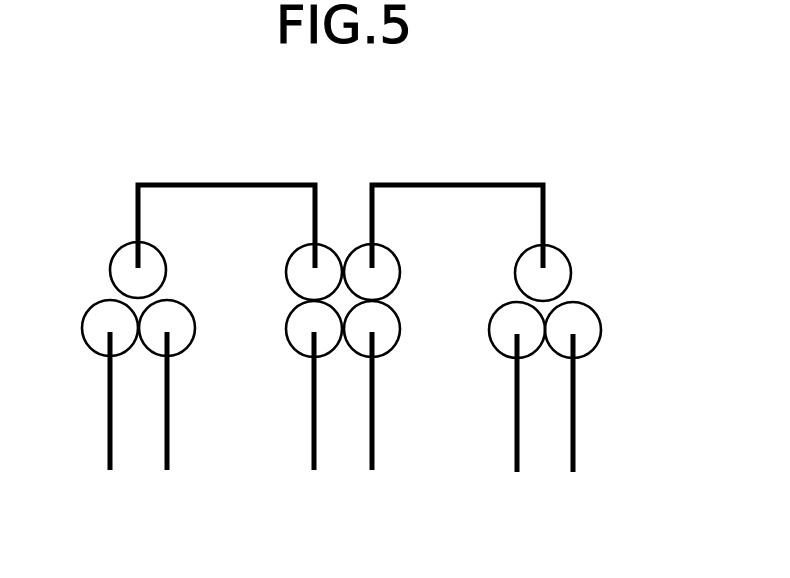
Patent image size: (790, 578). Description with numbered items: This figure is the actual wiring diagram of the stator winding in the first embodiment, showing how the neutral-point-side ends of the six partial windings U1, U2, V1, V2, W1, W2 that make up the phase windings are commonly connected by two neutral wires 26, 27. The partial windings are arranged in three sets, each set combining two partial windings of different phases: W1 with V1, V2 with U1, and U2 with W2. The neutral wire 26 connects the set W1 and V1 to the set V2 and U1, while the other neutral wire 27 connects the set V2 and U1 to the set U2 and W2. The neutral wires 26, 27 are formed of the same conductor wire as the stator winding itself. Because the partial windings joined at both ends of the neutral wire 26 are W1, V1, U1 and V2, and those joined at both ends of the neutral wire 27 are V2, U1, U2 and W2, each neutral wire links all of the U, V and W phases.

The neutral wire 26 is at (268, 185).
The neutral wire 27 is at (417, 185).
The partial winding W1 is at (110, 410).
The partial winding V1 is at (167, 410).
The partial winding U1 is at (372, 411).
The partial winding W2 is at (573, 411).
The partial winding V2 is at (314, 411).
The partial winding U2 is at (517, 411).